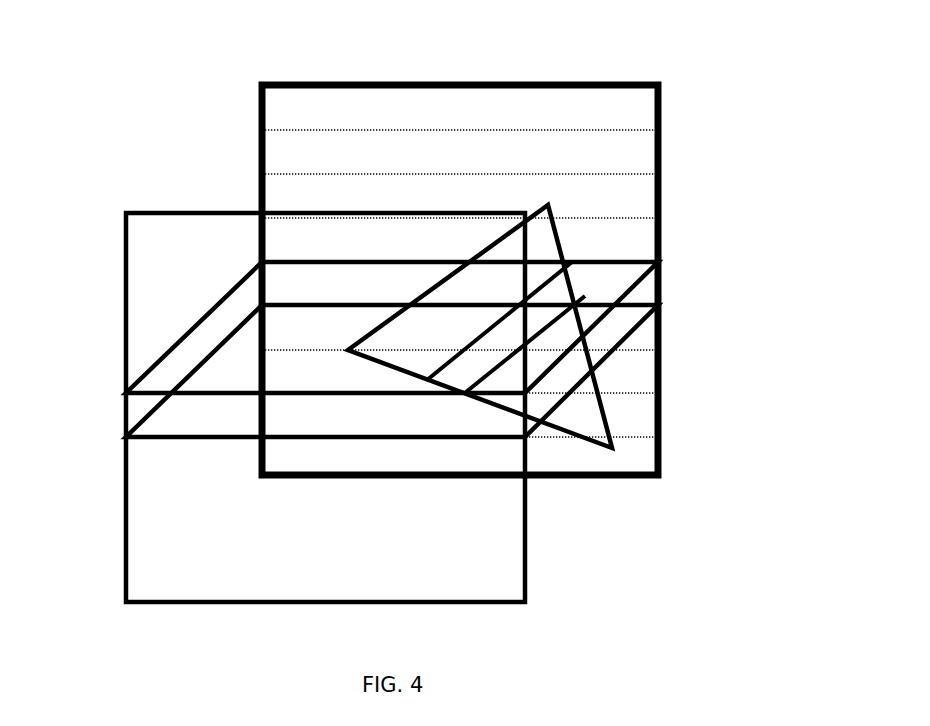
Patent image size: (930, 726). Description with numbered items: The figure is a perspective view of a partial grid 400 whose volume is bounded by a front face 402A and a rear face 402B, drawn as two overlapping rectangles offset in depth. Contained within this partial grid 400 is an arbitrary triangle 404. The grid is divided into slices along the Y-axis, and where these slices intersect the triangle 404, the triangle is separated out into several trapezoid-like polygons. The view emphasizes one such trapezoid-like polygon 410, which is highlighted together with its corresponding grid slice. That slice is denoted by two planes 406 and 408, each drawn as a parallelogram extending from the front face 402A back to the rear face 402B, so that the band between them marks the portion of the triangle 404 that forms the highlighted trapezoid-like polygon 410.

The partial grid 400 is at (712, 82).
The front face 402A is at (127, 212).
The rear face 402B is at (258, 84).
The arbitrary triangle 404 is at (603, 421).
The plane 406 is at (131, 381).
The plane 408 is at (131, 426).
The trapezoid-like polygon 410 is at (562, 291).